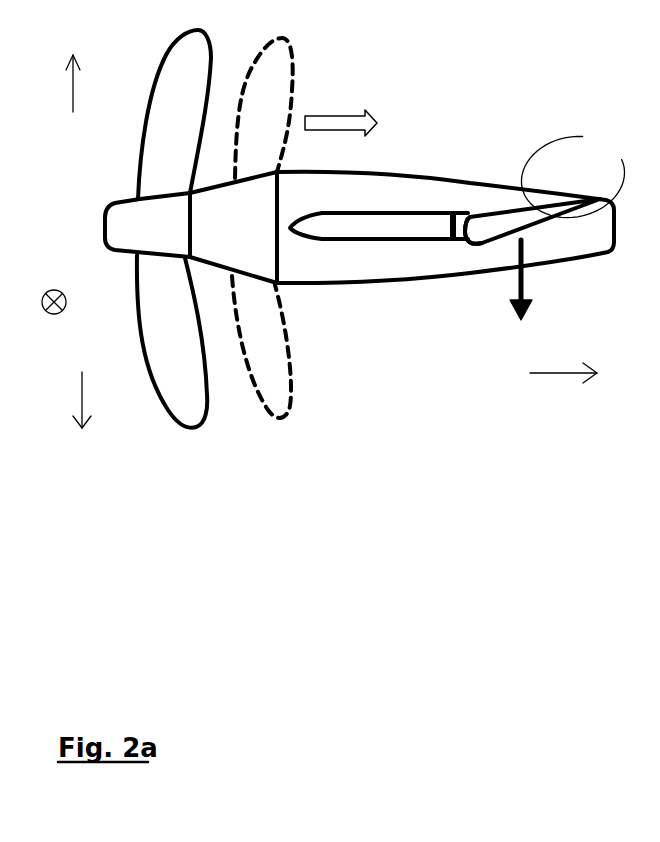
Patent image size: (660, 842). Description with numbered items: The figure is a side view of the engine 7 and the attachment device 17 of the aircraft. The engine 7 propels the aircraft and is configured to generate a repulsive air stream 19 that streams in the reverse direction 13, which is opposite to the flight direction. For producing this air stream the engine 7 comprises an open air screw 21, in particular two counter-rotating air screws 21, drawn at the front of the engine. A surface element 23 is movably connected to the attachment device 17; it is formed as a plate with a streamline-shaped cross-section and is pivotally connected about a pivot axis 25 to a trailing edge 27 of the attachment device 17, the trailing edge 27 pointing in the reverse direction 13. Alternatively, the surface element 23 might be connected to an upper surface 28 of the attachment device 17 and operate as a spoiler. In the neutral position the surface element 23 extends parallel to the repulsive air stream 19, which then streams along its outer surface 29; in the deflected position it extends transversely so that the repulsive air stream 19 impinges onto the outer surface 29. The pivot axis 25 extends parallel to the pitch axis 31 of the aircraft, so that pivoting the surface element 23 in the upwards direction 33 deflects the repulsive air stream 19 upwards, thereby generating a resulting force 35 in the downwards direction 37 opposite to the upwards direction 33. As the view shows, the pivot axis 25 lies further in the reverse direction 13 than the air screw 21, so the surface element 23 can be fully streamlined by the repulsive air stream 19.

The engine 7 is at (314, 205).
The reverse direction 13 is at (567, 375).
The attachment device 17 is at (387, 232).
The repulsive air stream 19 is at (330, 123).
The open air screw 21 is at (215, 259).
The surface element 23 is at (500, 222).
The pivot axis 25 is at (473, 223).
The trailing edge 27 is at (458, 242).
The upper surface 28 is at (368, 208).
The outer surface 29 is at (575, 175).
The pitch axis 31 is at (55, 287).
The upwards direction 33 is at (75, 92).
The resulting force 35 is at (527, 280).
The downwards direction 37 is at (80, 397).